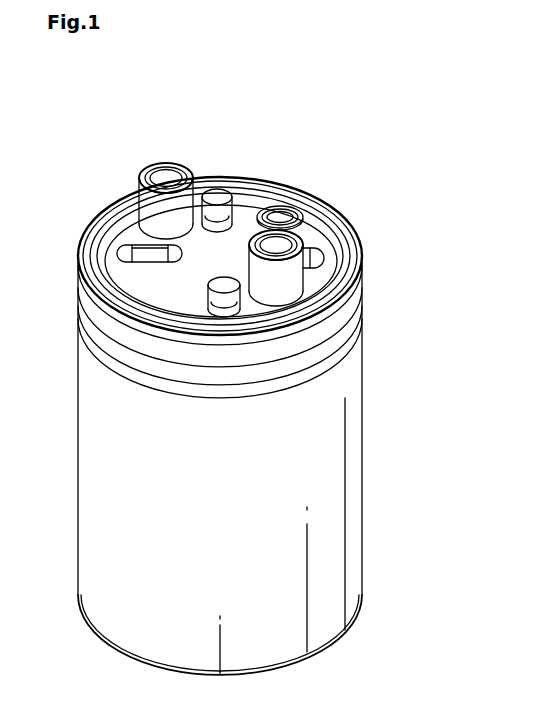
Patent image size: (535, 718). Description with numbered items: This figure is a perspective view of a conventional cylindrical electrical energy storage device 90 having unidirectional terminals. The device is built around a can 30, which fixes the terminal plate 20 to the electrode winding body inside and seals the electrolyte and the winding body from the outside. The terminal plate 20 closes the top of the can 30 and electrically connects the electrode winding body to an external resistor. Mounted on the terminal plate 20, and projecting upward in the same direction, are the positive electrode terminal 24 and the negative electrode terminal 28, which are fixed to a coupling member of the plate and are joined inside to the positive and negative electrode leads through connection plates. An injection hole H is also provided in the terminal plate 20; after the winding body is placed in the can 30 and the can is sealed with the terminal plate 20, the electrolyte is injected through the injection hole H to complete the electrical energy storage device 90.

The electrical energy storage device 90 is at (241, 71).
The terminal plate 20 is at (372, 246).
The positive electrode terminal 24 is at (157, 210).
The negative electrode terminal 28 is at (292, 284).
The can 30 is at (372, 483).
The injection hole H is at (285, 212).